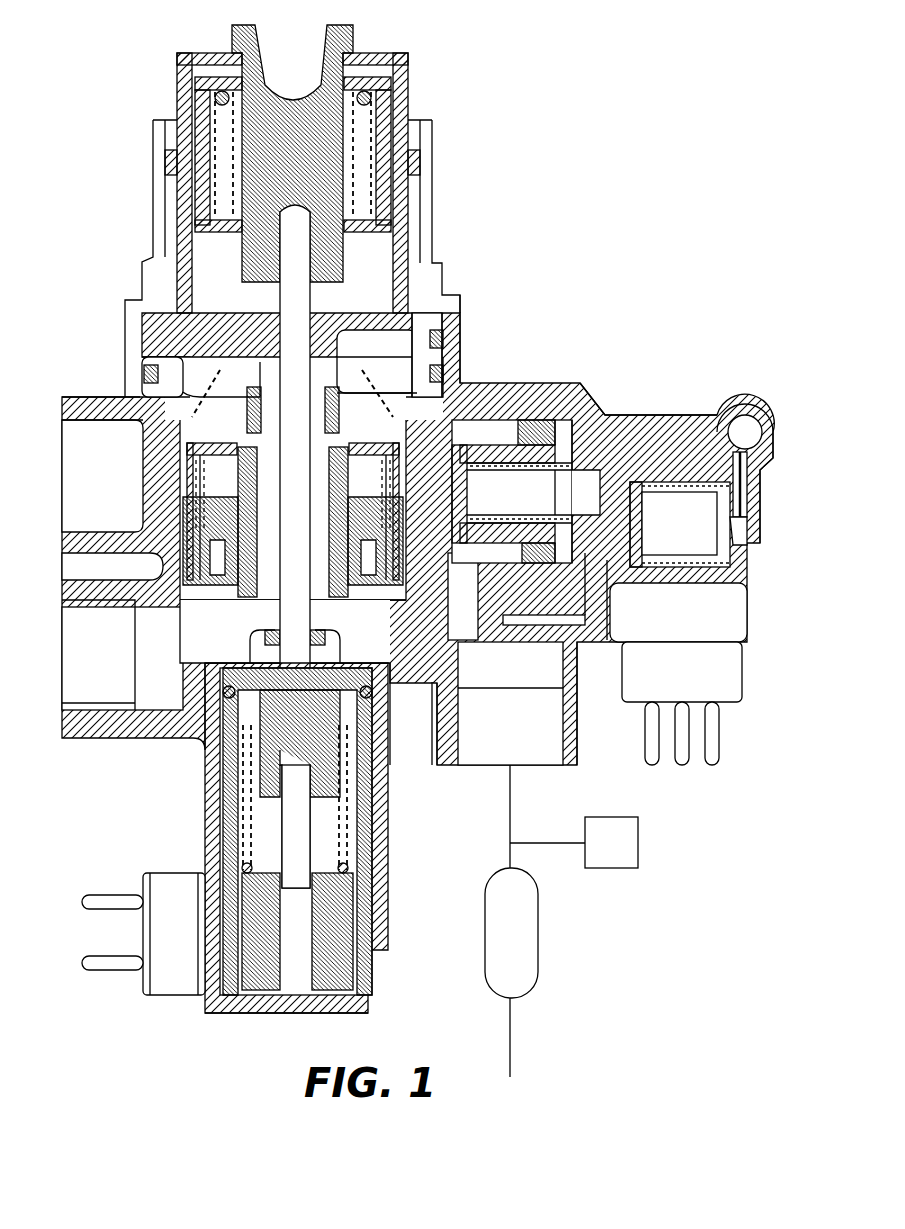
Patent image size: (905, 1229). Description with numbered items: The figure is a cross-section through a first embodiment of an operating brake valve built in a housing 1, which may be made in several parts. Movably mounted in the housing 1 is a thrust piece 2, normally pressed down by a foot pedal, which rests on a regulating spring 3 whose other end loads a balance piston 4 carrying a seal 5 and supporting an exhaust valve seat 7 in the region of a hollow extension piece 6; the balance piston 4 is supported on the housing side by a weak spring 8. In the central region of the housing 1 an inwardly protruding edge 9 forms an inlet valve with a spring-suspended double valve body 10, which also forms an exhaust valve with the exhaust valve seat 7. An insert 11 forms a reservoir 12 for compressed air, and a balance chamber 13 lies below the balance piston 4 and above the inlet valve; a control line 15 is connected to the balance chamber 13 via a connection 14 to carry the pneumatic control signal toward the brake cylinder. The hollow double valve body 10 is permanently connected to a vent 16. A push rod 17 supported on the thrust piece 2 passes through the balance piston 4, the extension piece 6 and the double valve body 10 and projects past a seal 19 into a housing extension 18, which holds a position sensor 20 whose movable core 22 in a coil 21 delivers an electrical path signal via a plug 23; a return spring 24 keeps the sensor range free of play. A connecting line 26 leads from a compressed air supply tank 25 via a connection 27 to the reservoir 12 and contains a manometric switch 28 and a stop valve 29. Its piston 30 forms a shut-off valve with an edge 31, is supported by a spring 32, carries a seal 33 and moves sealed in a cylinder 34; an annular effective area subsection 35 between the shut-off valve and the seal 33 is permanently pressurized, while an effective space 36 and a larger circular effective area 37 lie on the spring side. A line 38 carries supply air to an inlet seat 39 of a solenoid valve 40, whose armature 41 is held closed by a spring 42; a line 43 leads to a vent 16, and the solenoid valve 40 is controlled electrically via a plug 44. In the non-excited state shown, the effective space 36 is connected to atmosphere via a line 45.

The housing 1 is at (165, 202).
The thrust piece 2 is at (252, 139).
The regulating spring 3 is at (205, 92).
The balance piston 4 is at (167, 333).
The seal 5 is at (148, 372).
The hollow extension piece 6 is at (337, 367).
The exhaust valve seat 7 is at (373, 432).
The weak spring 8 is at (445, 400).
The inwardly protruding edge 9 is at (218, 420).
The double valve body 10 is at (212, 490).
The insert 11 is at (183, 568).
The reservoir 12 is at (227, 478).
The balance chamber 13 is at (413, 340).
The connection 14 is at (90, 494).
The control line 15 is at (62, 470).
The vent 16 is at (90, 660).
The push rod 17 is at (293, 593).
The housing extension 18 is at (207, 780).
The seal 19 is at (267, 638).
The position sensor 20 is at (268, 1032).
The coil 21 is at (333, 983).
The movable core 22 is at (295, 845).
The plug 23 is at (177, 980).
The return spring 24 is at (245, 870).
The compressed air supply tank 25 is at (518, 950).
The connecting line 26 is at (462, 600).
The connection 27 is at (528, 745).
The manometric switch 28 is at (612, 860).
The stop valve 29 is at (540, 342).
The piston 30 is at (540, 445).
The edge 31 is at (465, 455).
The spring 32 is at (568, 465).
The seal 33 is at (530, 595).
The cylinder 34 is at (540, 620).
The effective area subsection 35 is at (490, 640).
The effective space 36 is at (590, 470).
The effective area 37 is at (578, 440).
The line 38 is at (738, 600).
The inlet seat 39 is at (690, 425).
The solenoid valve 40 is at (778, 468).
The armature 41 is at (688, 543).
The spring 42 is at (727, 487).
The line 43 is at (748, 513).
The plug 44 is at (723, 682).
The line 45 is at (570, 490).